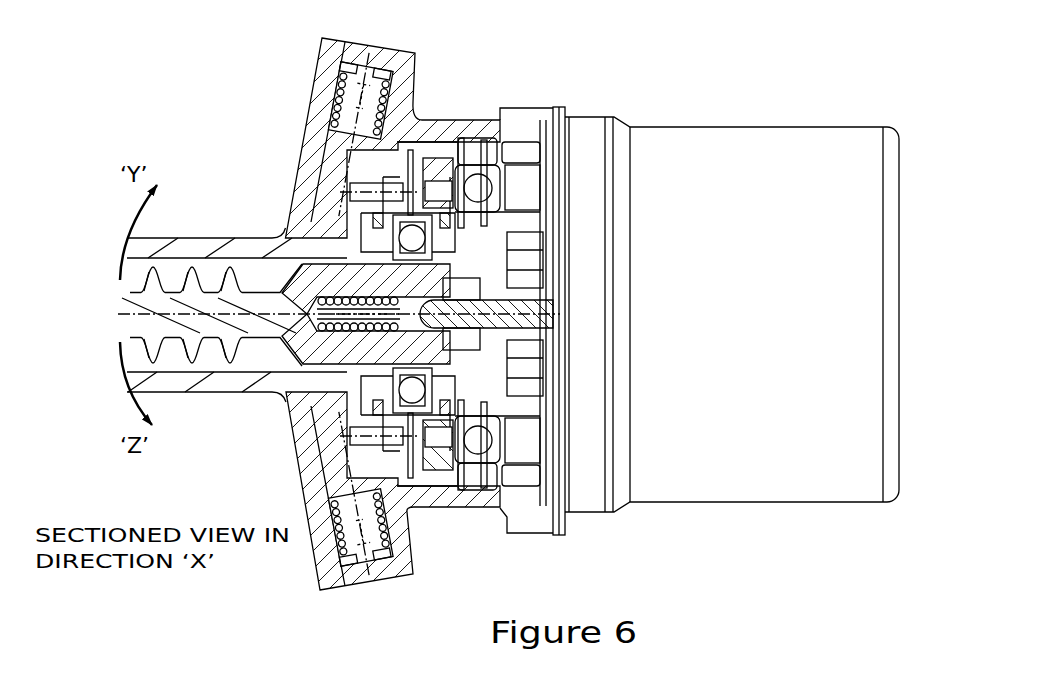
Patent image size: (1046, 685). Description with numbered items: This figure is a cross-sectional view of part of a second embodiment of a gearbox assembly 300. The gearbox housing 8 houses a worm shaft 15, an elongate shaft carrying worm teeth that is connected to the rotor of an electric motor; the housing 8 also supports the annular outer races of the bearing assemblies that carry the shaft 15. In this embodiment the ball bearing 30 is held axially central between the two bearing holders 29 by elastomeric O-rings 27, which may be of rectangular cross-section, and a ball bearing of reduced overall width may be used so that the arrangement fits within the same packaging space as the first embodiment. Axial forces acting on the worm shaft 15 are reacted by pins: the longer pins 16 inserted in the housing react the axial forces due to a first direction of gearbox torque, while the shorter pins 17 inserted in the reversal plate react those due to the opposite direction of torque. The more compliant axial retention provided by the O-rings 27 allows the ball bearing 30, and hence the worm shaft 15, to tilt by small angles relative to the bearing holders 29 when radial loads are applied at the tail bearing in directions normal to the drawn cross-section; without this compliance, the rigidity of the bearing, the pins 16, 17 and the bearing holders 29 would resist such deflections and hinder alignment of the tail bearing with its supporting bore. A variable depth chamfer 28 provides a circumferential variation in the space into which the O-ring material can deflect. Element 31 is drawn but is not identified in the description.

The gearbox housing 8 is at (210, 240).
The worm shaft 15 is at (190, 267).
The longer pins 16 is at (348, 445).
The shorter pins 17 is at (443, 447).
The elastomeric O-rings 27 is at (383, 212).
The variable depth chamfer 28 is at (373, 392).
The bearing holders 29 is at (372, 217).
The ball bearing 30 is at (403, 233).
The secondary bearing block 31 is at (455, 172).
The gearbox assembly 300 is at (712, 70).